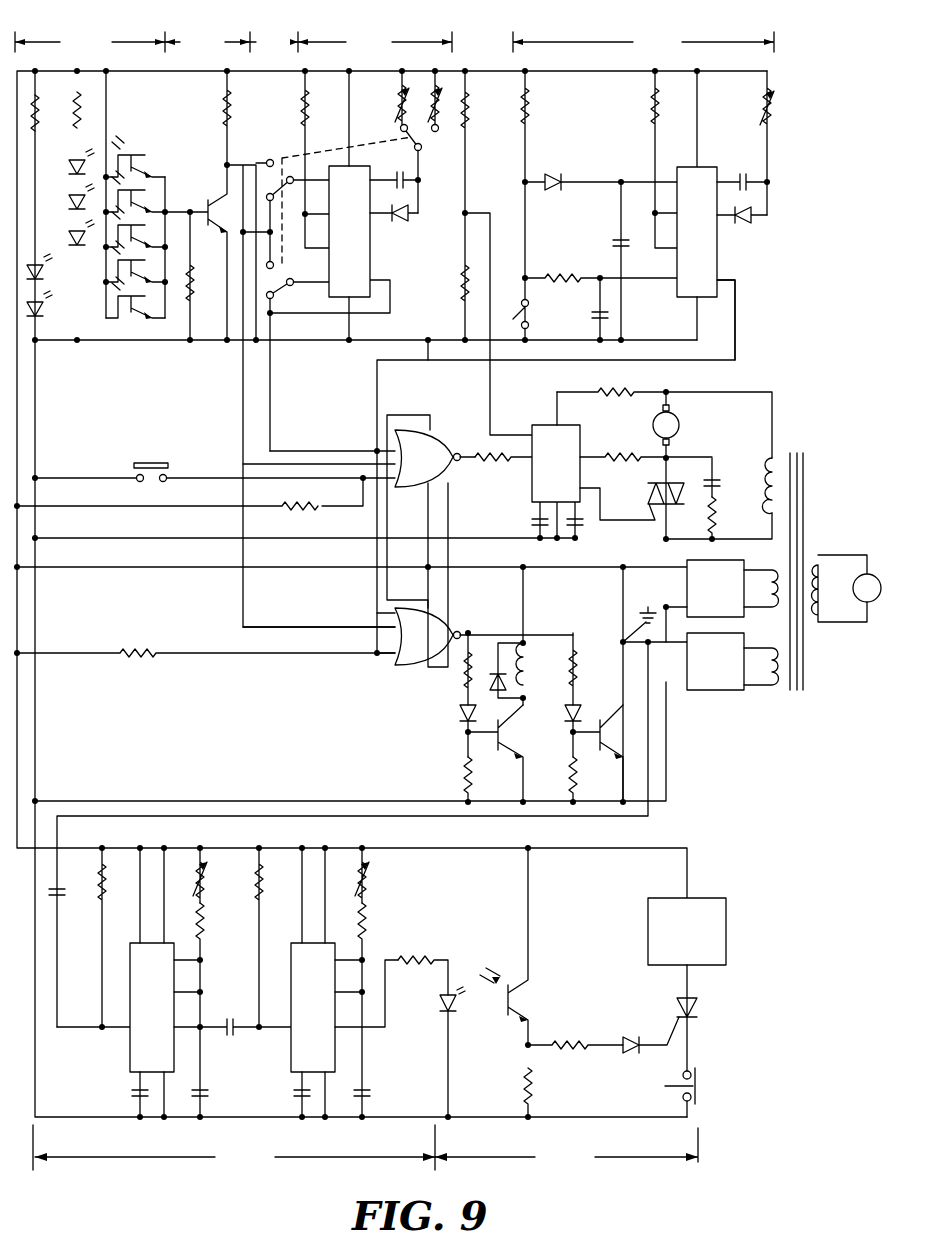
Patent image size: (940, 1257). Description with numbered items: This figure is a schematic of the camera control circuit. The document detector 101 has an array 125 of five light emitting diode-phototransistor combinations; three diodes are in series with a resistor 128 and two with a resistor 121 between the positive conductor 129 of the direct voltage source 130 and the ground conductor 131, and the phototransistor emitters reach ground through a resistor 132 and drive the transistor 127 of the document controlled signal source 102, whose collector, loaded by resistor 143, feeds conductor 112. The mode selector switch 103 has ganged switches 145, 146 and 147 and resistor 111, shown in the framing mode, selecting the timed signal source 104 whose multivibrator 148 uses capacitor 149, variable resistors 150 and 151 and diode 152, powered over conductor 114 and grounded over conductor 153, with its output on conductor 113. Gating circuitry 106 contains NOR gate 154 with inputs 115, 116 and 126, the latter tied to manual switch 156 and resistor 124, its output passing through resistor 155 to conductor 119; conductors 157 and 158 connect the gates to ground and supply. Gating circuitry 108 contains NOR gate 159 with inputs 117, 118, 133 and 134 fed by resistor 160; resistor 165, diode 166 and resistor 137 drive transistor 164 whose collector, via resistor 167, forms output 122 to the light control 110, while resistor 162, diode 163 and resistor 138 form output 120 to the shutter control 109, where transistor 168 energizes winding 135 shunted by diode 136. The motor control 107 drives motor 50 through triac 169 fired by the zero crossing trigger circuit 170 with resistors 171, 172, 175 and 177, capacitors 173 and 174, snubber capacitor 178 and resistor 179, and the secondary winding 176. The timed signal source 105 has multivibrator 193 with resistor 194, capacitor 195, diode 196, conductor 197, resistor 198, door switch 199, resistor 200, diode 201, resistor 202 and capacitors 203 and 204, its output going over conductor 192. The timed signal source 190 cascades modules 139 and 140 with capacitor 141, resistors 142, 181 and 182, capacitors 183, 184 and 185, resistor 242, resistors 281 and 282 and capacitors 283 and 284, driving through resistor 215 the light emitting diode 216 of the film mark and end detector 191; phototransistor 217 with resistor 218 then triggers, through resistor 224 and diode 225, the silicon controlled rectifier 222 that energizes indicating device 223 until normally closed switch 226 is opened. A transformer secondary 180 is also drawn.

The motor 50 is at (682, 425).
The document detector 101 is at (90, 43).
The document controlled signal source 102 is at (207, 43).
The mode selector switch 103 is at (274, 43).
The timed signal source 104 is at (375, 43).
The timed signal source 105 is at (643, 43).
The gating circuitry 106 is at (448, 466).
The motor control circuit 107 is at (715, 382).
The gating circuitry 108 is at (408, 700).
The shutter control 109 is at (533, 646).
The light control 110 is at (728, 690).
The resistor 111 is at (299, 118).
The conductor 112 is at (242, 395).
The output conductor 113 is at (270, 392).
The conductor 114 is at (321, 159).
The input 115 is at (376, 450).
The input 116 is at (290, 450).
The input 117 is at (372, 602).
The input 118 is at (292, 627).
The conductor 119 is at (503, 474).
The output 120 is at (474, 730).
The resistor 121 is at (51, 113).
The output 122 is at (623, 622).
The resistor 124 is at (306, 510).
The array of light emitting diode-phototransistor combinations 125 is at (98, 306).
The input 126 is at (212, 472).
The transistor 127 is at (206, 188).
The resistor 128 is at (78, 144).
The conductor 129 is at (147, 73).
The direct voltage source 130 is at (685, 582).
The ground conductor 131 is at (77, 360).
The resistor 132 is at (192, 300).
The input terminal 133 is at (370, 645).
The input terminal 134 is at (380, 665).
The winding 135 is at (527, 674).
The diode 136 is at (491, 642).
The resistor 137 is at (570, 772).
The resistor 138 is at (457, 767).
The timing circuit module 139 is at (130, 1052).
The timing circuit module 140 is at (292, 1046).
The capacitor 141 is at (62, 878).
The resistor 142 is at (97, 904).
The resistor 143 is at (246, 118).
The switch 145 is at (273, 157).
The switch 146 is at (276, 292).
The switch 147 is at (404, 135).
The retriggerable monostable multivibrator 148 is at (376, 260).
The capacitor 149 is at (394, 173).
The variable resistor 150 is at (395, 102).
The variable resistor 151 is at (433, 133).
The diode 152 is at (397, 222).
The conductor 153 is at (354, 331).
The NOR gate 154 is at (445, 425).
The resistor 155 is at (482, 452).
The manually operated switch 156 is at (148, 460).
The conductor 157 is at (429, 376).
The conductor 158 is at (430, 552).
The NOR gate 159 is at (456, 618).
The resistor 160 is at (143, 660).
The resistor 162 is at (460, 675).
The diode 163 is at (455, 717).
The transistor 164 is at (590, 750).
The resistor 165 is at (573, 664).
The diode 166 is at (573, 712).
The resistor 167 is at (618, 592).
The transistor 168 is at (483, 758).
The triac 169 is at (647, 493).
The zero crossing AC trigger circuit 170 is at (536, 425).
The resistor 171 is at (468, 117).
The resistor 172 is at (460, 297).
The capacitor 173 is at (580, 542).
The capacitor 174 is at (532, 520).
The resistor 175 is at (625, 451).
The secondary transformer winding 176 is at (779, 456).
The resistor 177 is at (600, 388).
The capacitor 178 is at (729, 478).
The resistor 179 is at (718, 508).
The transformer secondary 180 is at (818, 550).
The resistor 181 is at (203, 876).
The resistor 182 is at (202, 924).
The capacitor 183 is at (207, 1088).
The capacitor 184 is at (130, 1094).
The capacitor 185 is at (233, 1014).
The timed signal source 190 is at (234, 1149).
The film mark and end of film detector 191 is at (566, 1151).
The conductor 192 is at (740, 317).
The retriggerable monostable multivibrator 193 is at (708, 165).
The resistor 194 is at (768, 117).
The capacitor 195 is at (736, 172).
The diode 196 is at (750, 228).
The conductor 197 is at (695, 95).
The resistor 198 is at (648, 108).
The switch 199 is at (542, 326).
The resistor 200 is at (546, 187).
The diode 201 is at (562, 163).
The resistor 202 is at (566, 272).
The capacitor 203 is at (612, 238).
The capacitor 204 is at (596, 322).
The resistor 215 is at (424, 956).
The light emitting diode 216 is at (458, 1010).
The phototransistor 217 is at (533, 992).
The resistor 218 is at (535, 1090).
The silicon controlled rectifier 222 is at (700, 1002).
The device 223 is at (716, 898).
The resistor 224 is at (584, 1038).
The diode 225 is at (626, 1068).
The normally closed switch 226 is at (698, 1084).
The resistor 242 is at (272, 882).
The resistor 281 is at (375, 876).
The resistor 282 is at (375, 920).
The capacitor 283 is at (366, 1088).
The capacitor 284 is at (292, 1094).